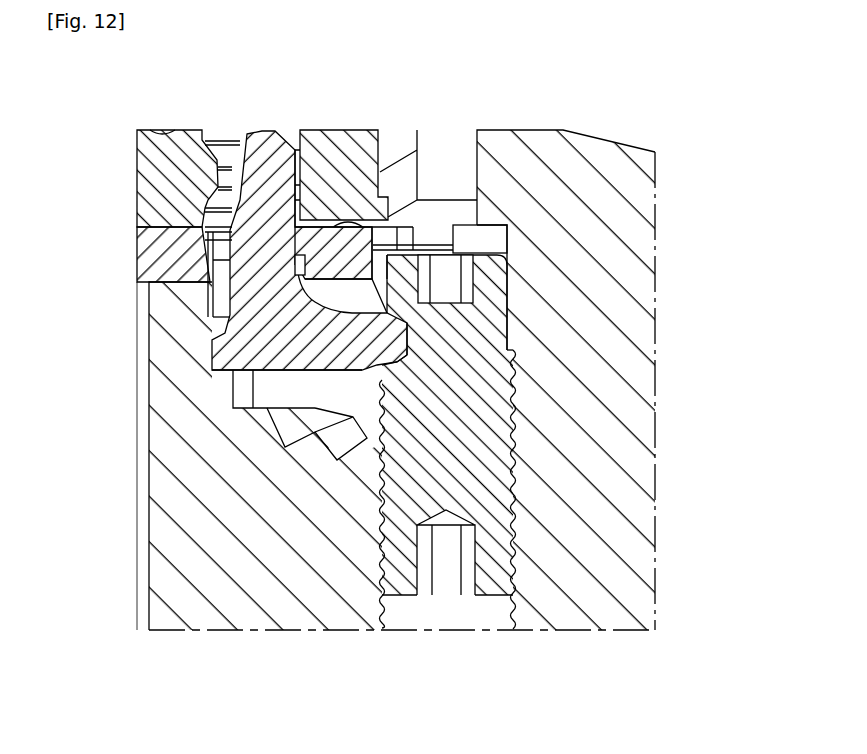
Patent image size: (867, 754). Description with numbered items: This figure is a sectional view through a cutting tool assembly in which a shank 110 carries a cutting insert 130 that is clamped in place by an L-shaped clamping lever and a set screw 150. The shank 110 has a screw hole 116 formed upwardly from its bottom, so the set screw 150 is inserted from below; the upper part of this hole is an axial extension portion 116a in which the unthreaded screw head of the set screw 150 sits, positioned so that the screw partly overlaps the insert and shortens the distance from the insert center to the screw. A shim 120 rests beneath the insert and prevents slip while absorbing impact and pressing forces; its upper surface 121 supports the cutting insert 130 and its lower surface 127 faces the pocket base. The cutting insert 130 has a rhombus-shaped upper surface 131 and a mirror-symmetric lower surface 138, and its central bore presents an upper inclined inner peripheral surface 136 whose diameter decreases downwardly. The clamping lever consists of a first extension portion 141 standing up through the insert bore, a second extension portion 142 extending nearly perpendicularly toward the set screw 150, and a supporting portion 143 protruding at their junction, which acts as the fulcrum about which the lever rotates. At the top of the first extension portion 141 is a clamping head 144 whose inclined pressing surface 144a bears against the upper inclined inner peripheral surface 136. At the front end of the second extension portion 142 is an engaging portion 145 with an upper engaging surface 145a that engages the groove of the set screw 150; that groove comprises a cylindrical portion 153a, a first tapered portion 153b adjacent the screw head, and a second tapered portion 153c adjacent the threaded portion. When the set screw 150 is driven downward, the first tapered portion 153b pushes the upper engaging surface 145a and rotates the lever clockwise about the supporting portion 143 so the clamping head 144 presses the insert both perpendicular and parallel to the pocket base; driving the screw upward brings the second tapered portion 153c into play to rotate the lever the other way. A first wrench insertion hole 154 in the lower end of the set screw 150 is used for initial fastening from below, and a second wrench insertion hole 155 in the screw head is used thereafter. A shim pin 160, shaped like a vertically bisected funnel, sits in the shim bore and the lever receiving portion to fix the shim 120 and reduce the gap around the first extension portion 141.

The shank 110 is at (583, 175).
The screw hole 116 is at (401, 607).
The axial extension portion 116a is at (503, 236).
The shim 120 is at (158, 237).
The upper surface 121 is at (352, 215).
The lower surface 127 is at (187, 283).
The cutting insert 130 is at (150, 160).
The upper surface 131 is at (192, 130).
The upper inclined inner peripheral surface 136 is at (268, 257).
The lower surface 138 is at (150, 233).
The first extension portion 141 is at (210, 228).
The second extension portion 142 is at (262, 408).
The supporting portion 143 is at (272, 381).
The clamping head 144 is at (298, 140).
The inclined pressing surface 144a is at (305, 155).
The engaging portion 145 is at (483, 318).
The upper engaging surface 145a is at (440, 300).
The set screw 150 is at (483, 432).
The cylindrical portion 153a is at (500, 340).
The first tapered portion 153b is at (392, 333).
The second tapered portion 153c is at (518, 367).
The first wrench insertion hole 154 is at (447, 578).
The second wrench insertion hole 155 is at (455, 268).
The shim pin 160 is at (197, 262).